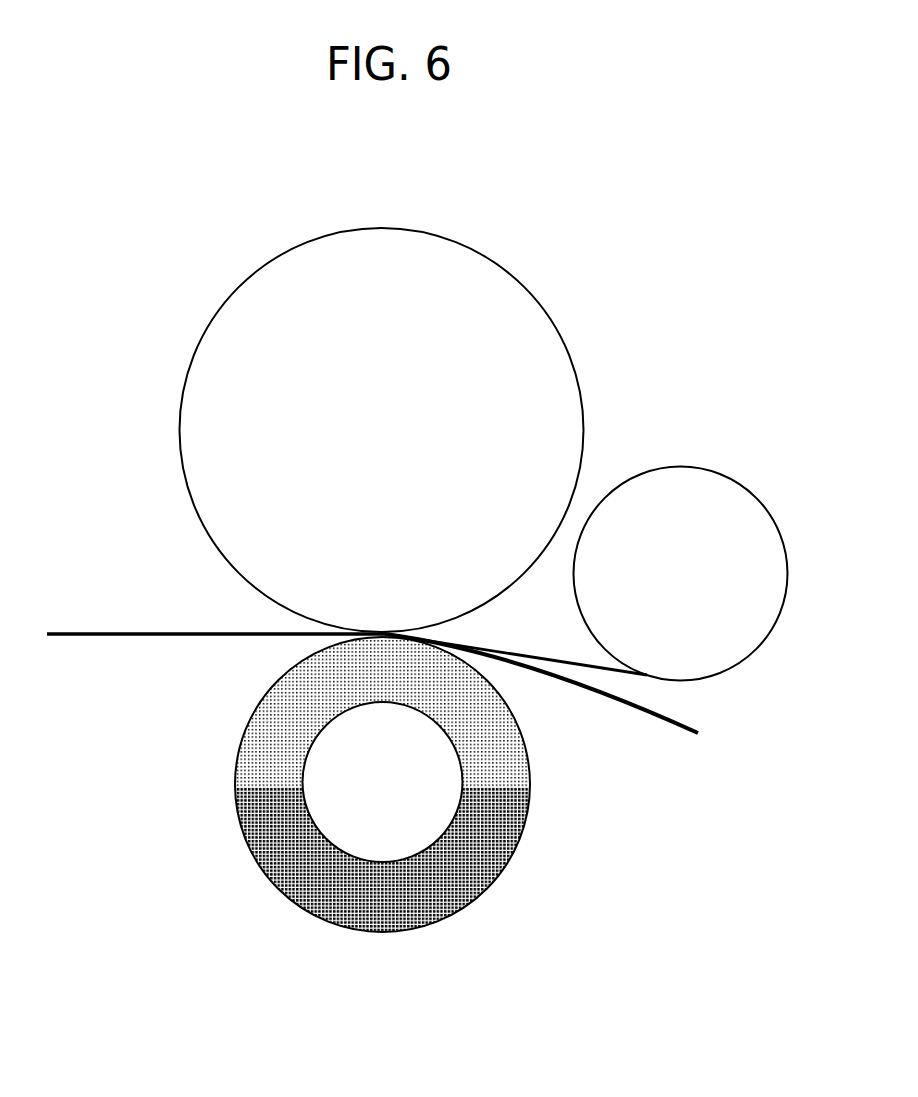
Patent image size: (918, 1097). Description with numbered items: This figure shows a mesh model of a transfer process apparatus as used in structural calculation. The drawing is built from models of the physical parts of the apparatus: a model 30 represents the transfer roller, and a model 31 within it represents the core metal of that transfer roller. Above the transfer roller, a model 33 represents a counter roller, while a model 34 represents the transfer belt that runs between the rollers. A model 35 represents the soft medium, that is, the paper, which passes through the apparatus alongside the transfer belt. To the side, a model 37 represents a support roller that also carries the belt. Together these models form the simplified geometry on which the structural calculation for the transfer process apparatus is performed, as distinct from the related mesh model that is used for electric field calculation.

The transfer roller model 30 is at (248, 748).
The core metal model 31 is at (420, 820).
The counter roller model 33 is at (235, 312).
The transfer belt model 34 is at (535, 657).
The soft medium model 35 is at (78, 637).
The support roller model 37 is at (740, 500).